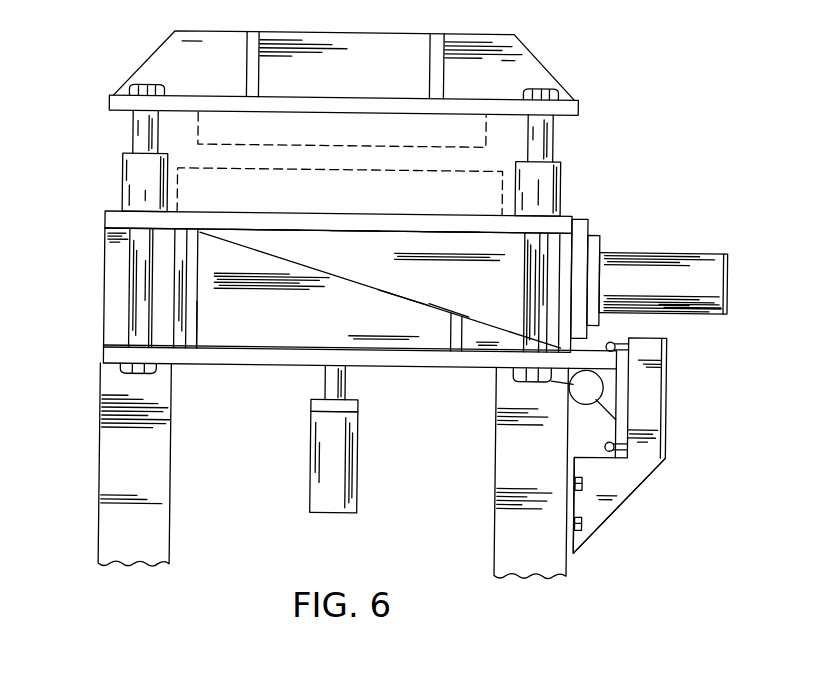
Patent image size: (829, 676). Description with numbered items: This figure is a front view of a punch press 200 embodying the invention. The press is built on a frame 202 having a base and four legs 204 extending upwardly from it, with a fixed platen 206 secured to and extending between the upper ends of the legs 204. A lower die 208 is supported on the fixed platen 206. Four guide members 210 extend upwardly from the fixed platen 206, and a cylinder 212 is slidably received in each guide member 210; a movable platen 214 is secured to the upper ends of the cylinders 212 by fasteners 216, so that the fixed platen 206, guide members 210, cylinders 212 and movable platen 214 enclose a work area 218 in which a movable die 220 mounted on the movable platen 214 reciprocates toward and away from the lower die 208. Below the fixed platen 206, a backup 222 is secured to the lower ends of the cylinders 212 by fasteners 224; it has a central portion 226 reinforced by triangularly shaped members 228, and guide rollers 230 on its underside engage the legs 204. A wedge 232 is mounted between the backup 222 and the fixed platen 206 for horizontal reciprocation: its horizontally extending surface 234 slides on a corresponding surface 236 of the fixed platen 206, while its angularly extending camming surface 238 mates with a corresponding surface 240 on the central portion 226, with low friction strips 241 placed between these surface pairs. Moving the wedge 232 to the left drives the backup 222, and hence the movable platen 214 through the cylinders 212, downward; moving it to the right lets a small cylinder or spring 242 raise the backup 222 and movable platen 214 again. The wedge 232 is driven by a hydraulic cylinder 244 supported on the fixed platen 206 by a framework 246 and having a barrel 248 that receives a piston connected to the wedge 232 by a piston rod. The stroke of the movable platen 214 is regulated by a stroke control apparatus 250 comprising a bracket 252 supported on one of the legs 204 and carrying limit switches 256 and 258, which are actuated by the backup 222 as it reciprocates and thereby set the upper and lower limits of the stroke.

The punch press 200 is at (135, 54).
The frame 202 is at (93, 455).
The legs 204 is at (107, 535).
The fixed platen 206 is at (107, 223).
The lower die 208 is at (362, 195).
The guide members 210 is at (133, 195).
The cylinders 212 is at (138, 143).
The movable platen 214 is at (532, 65).
The fasteners 216 is at (126, 82).
The work area 218 is at (192, 151).
The movable die 220 is at (362, 136).
The backup 222 is at (262, 369).
The fasteners 224 is at (158, 366).
The central portion 226 is at (289, 320).
The triangularly shaped members 228 is at (196, 322).
The guide rollers 230 is at (607, 384).
The wedge 232 is at (507, 294).
The horizontally extending surface 234 is at (357, 228).
The corresponding surface 236 is at (450, 233).
The camming surface 238 is at (380, 287).
The corresponding surface 240 is at (405, 292).
The strips 241 is at (263, 227).
The small cylinder or spring 242 is at (327, 470).
The hydraulic cylinder 244 is at (685, 243).
The framework 246 is at (580, 228).
The barrel 248 is at (692, 291).
The stroke control apparatus 250 is at (670, 426).
The bracket 252 is at (638, 474).
The limit switch 256 is at (617, 337).
The limit switch 258 is at (615, 436).